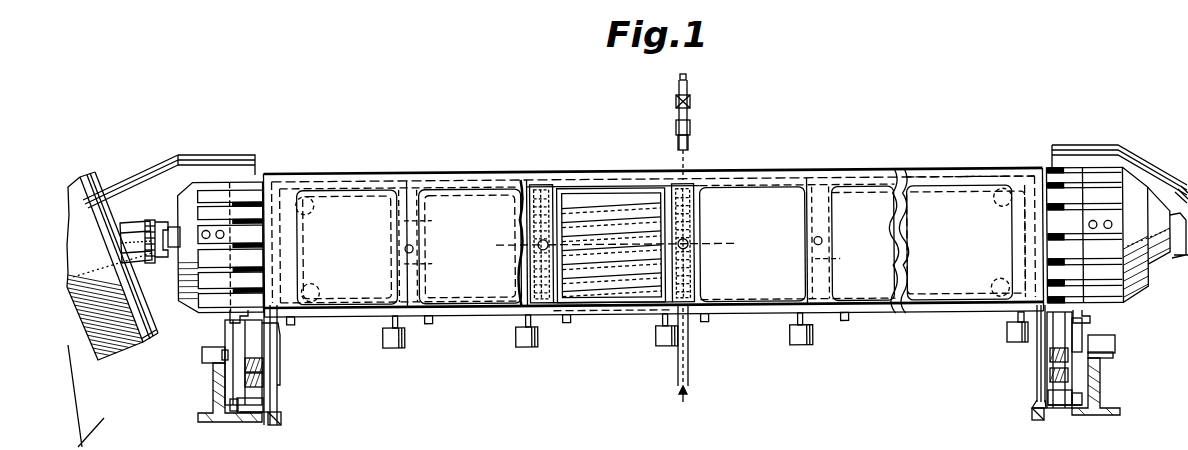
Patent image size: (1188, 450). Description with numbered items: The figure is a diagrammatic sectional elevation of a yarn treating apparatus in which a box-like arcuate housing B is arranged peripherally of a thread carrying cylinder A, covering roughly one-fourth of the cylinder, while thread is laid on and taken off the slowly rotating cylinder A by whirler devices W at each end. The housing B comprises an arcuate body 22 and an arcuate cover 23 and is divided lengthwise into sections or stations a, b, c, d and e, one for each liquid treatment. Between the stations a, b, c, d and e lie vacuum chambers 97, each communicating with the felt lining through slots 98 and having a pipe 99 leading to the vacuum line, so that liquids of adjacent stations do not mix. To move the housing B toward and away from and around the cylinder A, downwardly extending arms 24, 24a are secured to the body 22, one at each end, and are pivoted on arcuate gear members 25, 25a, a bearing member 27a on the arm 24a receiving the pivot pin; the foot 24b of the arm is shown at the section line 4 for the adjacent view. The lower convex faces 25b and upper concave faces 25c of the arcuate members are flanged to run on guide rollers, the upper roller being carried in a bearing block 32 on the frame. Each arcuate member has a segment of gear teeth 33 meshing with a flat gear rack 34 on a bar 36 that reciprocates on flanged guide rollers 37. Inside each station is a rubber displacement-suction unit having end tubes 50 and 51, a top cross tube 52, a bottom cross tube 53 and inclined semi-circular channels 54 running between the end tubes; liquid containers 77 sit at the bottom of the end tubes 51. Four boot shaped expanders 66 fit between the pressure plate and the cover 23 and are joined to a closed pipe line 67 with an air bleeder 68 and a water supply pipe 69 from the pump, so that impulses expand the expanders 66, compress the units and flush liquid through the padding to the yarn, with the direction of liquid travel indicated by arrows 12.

The section line 4- 4 is at (1022, 126).
The direction of web travel 12 is at (475, 244).
The arcuate body 22 is at (582, 180).
The arcuate cover 23 is at (519, 184).
The downwardly extending arm 24 is at (1036, 375).
The downwardly extending arm 24a is at (280, 395).
The bracket foot 24b is at (279, 422).
The arcuate gear member 25 is at (1060, 332).
The arcuate gear member 25a is at (257, 338).
The lower convex face 25b is at (222, 372).
The upper concave face 25c is at (232, 320).
The bearing member 27a is at (282, 350).
The bearing block 32 is at (212, 354).
The segment of gear teeth 33 is at (264, 366).
The flat gear rack 34 is at (264, 381).
The bar 36 is at (260, 402).
The flanged guide roller 37 is at (253, 407).
The end tube 50 is at (295, 320).
The end tube 51 is at (390, 321).
The top cross tube 52 is at (602, 195).
The bottom cross tube 53 is at (602, 305).
The inclined semi-circular channel 54 is at (585, 212).
The boot shaped expander 66 is at (311, 208).
The closed pipe line 67 is at (859, 180).
The air bleeder 68 is at (689, 114).
The water supply pipe 69 is at (689, 348).
The liquid container 77 is at (404, 338).
The vacuum chamber 97 is at (635, 243).
The slot 98 is at (692, 198).
The pipe 99 is at (405, 248).
The cylinder A is at (240, 194).
The arcuate housing B is at (379, 178).
The whirler device W is at (193, 155).
The section or station a is at (347, 247).
The section or station b is at (470, 246).
The section or station c is at (640, 205).
The section or station d is at (753, 244).
The section or station e is at (863, 243).